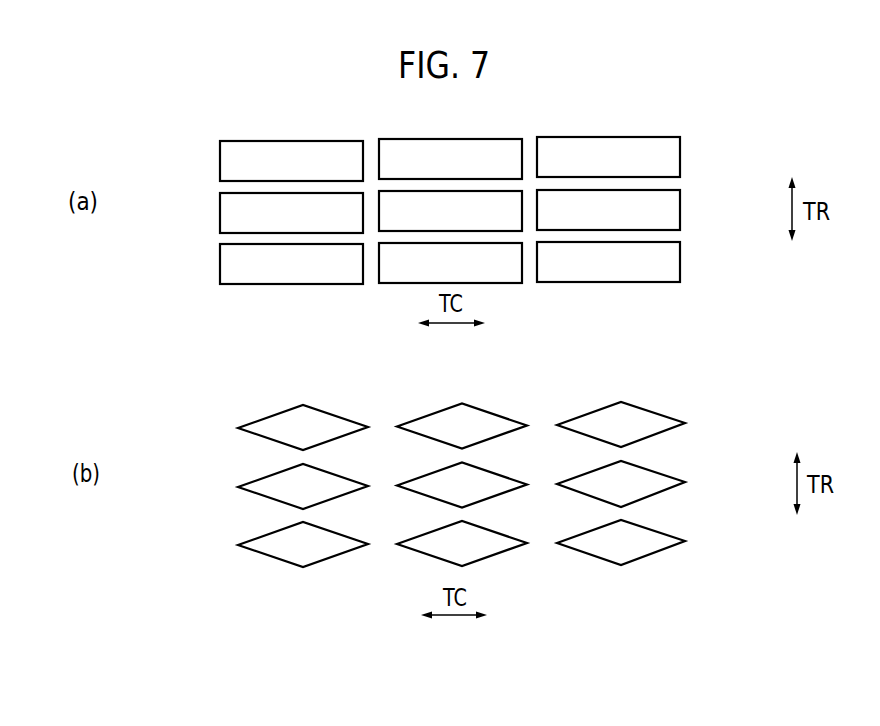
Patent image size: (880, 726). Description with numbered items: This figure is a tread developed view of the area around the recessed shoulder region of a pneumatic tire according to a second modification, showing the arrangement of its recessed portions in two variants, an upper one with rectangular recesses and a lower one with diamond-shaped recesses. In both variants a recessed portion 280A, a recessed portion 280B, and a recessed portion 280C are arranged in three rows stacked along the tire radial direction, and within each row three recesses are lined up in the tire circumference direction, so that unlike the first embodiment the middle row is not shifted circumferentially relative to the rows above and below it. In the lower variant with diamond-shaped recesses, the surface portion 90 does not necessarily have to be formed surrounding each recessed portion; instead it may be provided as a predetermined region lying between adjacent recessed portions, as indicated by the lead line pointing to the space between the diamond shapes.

The recessed portion 280A is at (662, 156).
The recessed portion 280B is at (662, 209).
The recessed portion 280C is at (662, 262).
The surface portion 90 is at (540, 461).